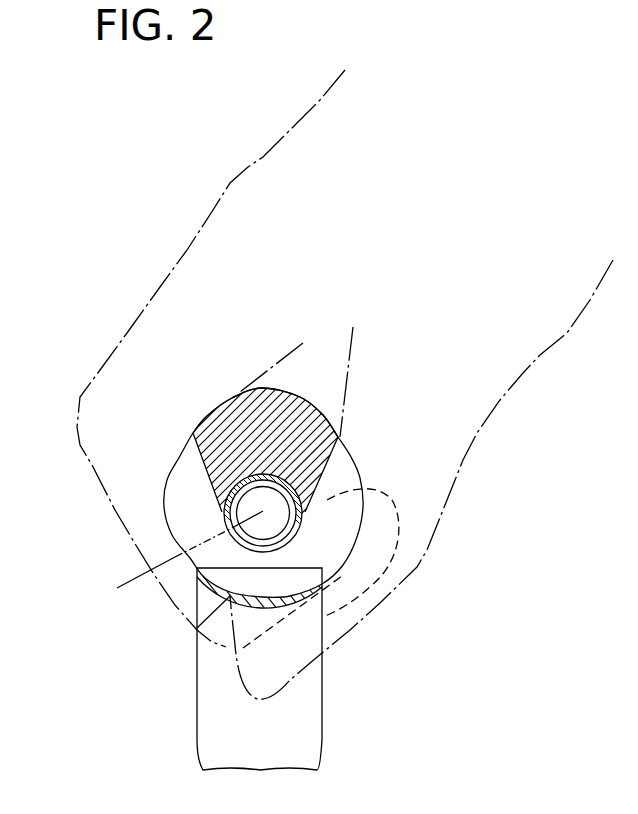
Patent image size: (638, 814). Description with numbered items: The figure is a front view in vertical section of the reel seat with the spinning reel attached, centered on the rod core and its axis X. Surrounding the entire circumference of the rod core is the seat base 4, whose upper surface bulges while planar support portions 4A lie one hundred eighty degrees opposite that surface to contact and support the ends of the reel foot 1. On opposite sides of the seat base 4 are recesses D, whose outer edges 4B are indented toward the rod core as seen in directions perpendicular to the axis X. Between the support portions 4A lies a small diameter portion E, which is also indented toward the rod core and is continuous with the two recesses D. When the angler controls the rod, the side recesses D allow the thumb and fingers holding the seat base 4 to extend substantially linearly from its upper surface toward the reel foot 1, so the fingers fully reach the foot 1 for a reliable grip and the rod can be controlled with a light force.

The reel foot 1 is at (272, 551).
The seat base 4 is at (163, 498).
The planar support portions 4A is at (302, 604).
The outer edges 4B is at (342, 437).
The recesses D is at (197, 452).
The small diameter portion E is at (275, 553).
The axis X is at (178, 560).